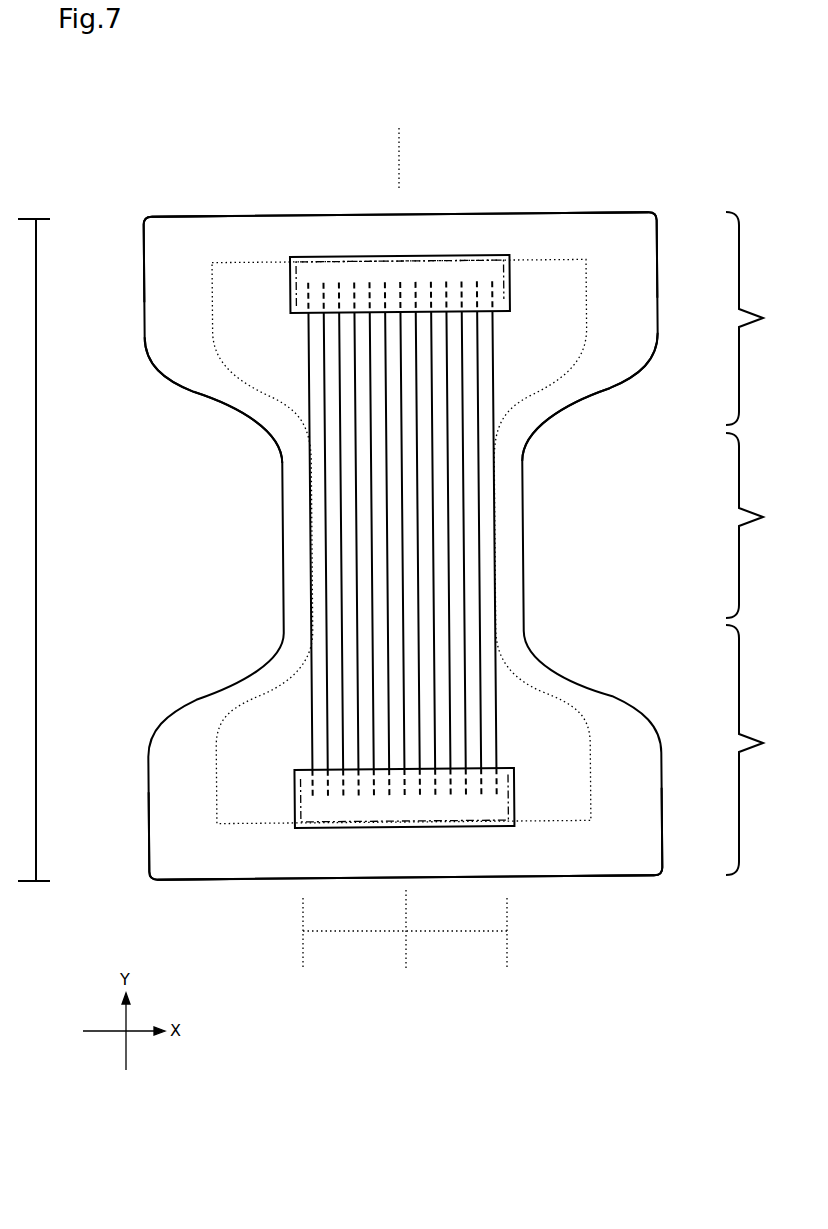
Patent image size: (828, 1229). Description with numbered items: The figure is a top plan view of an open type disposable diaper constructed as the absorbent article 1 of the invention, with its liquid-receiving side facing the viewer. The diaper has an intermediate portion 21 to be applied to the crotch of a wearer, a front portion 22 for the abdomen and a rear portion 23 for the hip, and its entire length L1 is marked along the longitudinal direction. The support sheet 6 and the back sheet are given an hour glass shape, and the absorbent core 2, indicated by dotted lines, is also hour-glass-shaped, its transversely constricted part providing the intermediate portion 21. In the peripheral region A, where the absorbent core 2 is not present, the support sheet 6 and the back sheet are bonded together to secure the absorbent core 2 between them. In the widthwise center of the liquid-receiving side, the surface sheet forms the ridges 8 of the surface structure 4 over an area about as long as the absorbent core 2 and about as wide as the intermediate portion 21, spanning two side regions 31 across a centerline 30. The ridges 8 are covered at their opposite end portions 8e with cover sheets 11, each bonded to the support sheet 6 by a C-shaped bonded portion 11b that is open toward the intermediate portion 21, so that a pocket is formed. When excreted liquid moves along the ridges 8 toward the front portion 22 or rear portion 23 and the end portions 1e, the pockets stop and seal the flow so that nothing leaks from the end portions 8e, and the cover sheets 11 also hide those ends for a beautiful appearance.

The absorbent article 1 is at (303, 481).
The end portions of the absorbent article 1e is at (556, 214).
The absorbent core 2 is at (212, 309).
The surface structure 4 is at (518, 363).
The support sheet 6 is at (223, 385).
The ridges 8 is at (367, 577).
The end portions of the ridges 8e is at (446, 284).
The cover sheets 11 is at (330, 268).
The C-shaped bonded portion 11b is at (349, 256).
The peripheral region A is at (172, 278).
The intermediate portion 21 is at (758, 525).
The front portion 22 is at (757, 318).
The rear portion 23 is at (759, 750).
The centerline 30 is at (404, 551).
The side regions 31 is at (405, 932).
The entire length of the absorbent article L1 is at (26, 550).